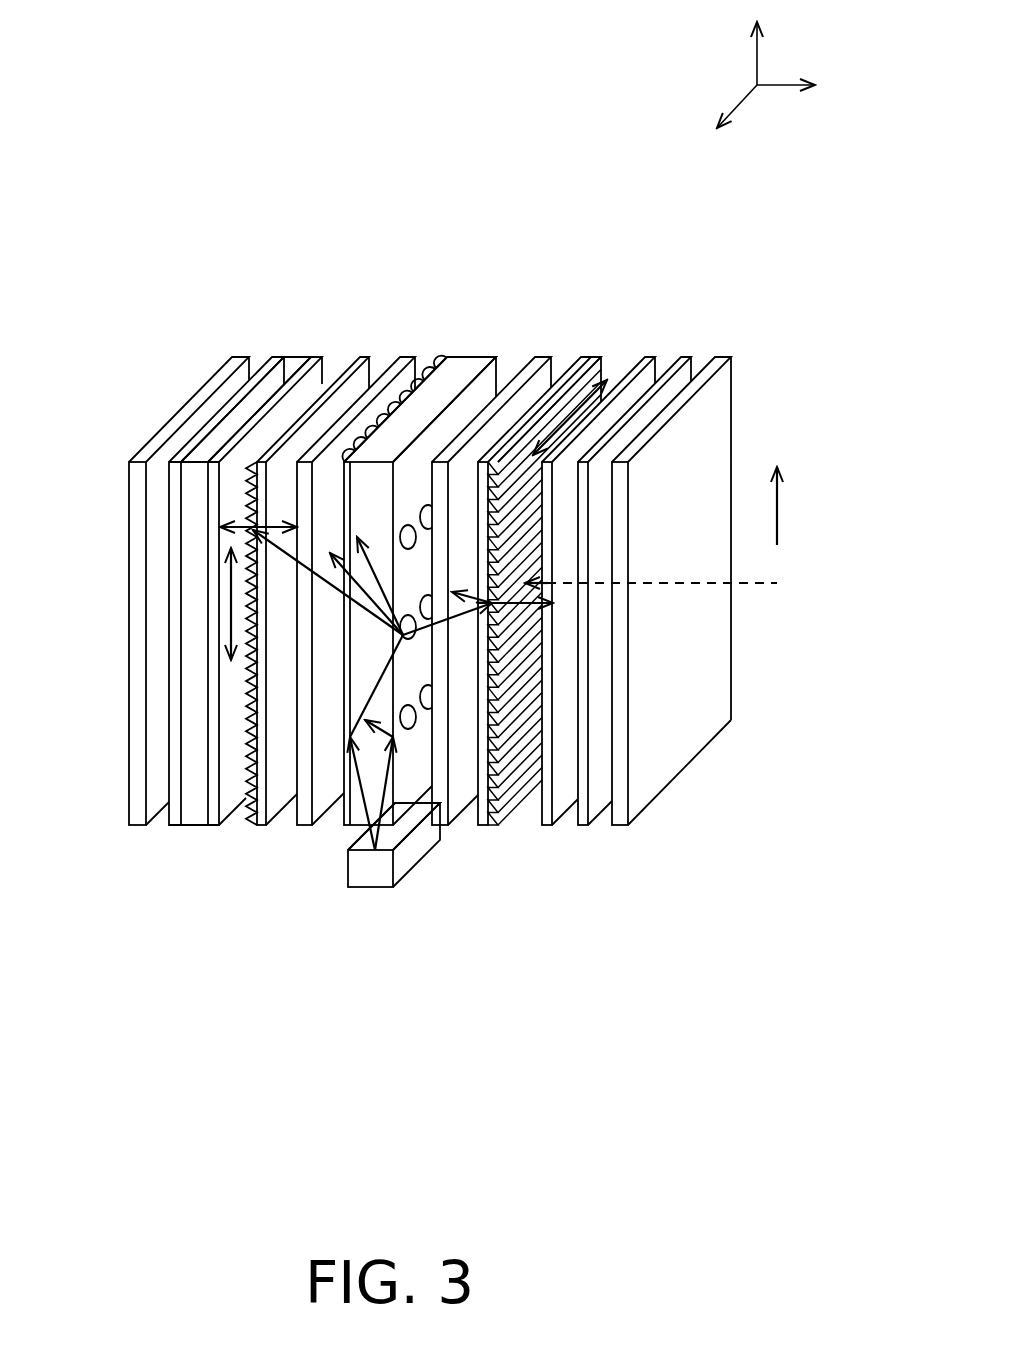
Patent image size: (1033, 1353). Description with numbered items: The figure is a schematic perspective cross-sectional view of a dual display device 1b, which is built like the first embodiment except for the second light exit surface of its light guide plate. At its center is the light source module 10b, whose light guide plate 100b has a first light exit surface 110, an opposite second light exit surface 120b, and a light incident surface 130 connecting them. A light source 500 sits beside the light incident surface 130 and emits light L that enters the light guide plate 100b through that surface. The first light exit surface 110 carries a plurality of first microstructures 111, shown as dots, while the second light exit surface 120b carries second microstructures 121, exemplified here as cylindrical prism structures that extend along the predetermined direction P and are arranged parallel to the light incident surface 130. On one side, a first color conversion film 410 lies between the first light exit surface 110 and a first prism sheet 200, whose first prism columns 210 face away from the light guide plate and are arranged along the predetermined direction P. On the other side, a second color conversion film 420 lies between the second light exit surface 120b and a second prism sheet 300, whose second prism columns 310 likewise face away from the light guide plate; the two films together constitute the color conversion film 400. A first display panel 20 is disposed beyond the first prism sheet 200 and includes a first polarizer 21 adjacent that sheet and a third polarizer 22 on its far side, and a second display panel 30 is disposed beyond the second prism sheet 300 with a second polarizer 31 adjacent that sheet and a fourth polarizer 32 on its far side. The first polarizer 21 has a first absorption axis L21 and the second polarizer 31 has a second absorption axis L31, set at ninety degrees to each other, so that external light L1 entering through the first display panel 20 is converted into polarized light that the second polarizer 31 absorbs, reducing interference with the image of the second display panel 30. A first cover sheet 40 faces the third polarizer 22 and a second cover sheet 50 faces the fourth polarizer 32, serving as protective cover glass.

The dual display device 1b is at (106, 148).
The light source module 10b is at (433, 619).
The first display panel 20 is at (627, 541).
The first polarizer 21 is at (642, 358).
The third polarizer 22 is at (685, 358).
The second display panel 30 is at (297, 358).
The second polarizer 31 is at (317, 358).
The fourth polarizer 32 is at (272, 358).
The first cover sheet 40 is at (723, 358).
The second cover sheet 50 is at (237, 358).
The light guide plate 100b is at (440, 619).
The first light exit surface 110 is at (496, 376).
The first microstructures 111 is at (411, 528).
The second light exit surface 120b is at (430, 366).
The second microstructures 121 is at (402, 402).
The light incident surface 130 is at (358, 832).
The first prism sheet 200 is at (487, 827).
The first prism columns 210 is at (593, 358).
The second prism sheet 300 is at (260, 824).
The second prism columns 310 is at (335, 370).
The color conversion film 400 is at (431, 678).
The first color conversion film 410 is at (443, 827).
The second color conversion film 420 is at (303, 816).
The light source 500 is at (373, 877).
The light L is at (350, 795).
The external light L1 is at (770, 590).
The first absorption axis L21 is at (587, 408).
The second absorption axis L31 is at (213, 603).
The predetermined direction P is at (791, 506).